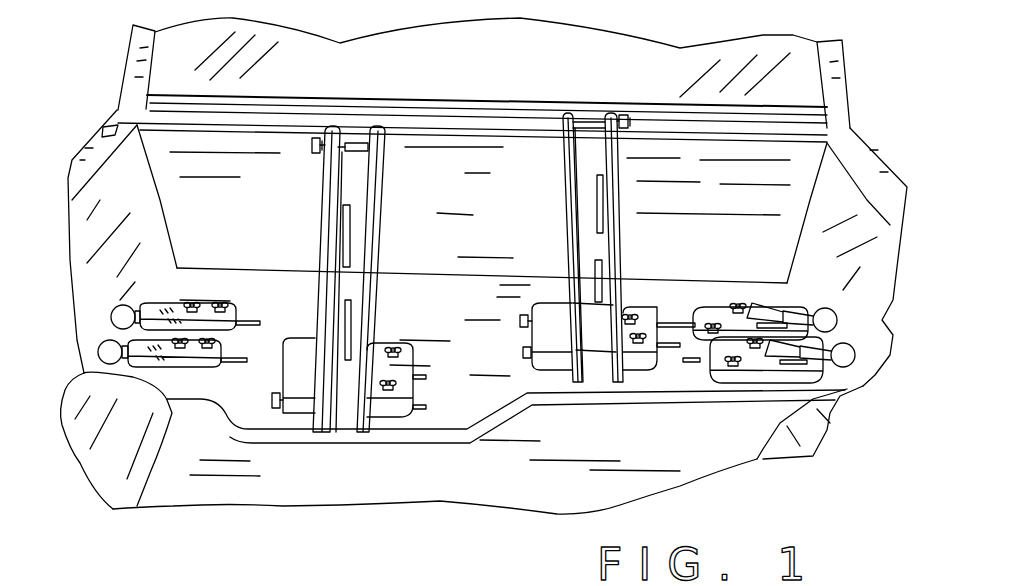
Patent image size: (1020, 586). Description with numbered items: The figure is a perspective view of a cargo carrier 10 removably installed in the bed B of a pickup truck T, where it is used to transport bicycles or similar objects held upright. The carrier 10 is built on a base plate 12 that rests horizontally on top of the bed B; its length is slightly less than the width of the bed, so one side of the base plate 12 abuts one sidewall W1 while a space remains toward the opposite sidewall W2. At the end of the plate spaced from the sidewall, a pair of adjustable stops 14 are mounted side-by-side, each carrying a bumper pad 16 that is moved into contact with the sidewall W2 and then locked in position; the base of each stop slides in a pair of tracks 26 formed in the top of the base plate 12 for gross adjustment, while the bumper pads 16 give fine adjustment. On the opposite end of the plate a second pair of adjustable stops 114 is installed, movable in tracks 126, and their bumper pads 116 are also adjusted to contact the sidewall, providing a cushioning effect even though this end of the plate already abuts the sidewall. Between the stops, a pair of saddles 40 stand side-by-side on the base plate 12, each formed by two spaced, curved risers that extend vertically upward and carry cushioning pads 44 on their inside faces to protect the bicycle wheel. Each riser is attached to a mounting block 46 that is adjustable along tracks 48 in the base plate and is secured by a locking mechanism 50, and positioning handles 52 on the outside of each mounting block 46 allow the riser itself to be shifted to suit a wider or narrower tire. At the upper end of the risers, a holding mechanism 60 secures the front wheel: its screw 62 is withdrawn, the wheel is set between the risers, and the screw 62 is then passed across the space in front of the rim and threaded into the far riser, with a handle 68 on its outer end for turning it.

The cargo carrier 10 is at (496, 456).
The base plate 12 is at (236, 434).
The adjustable stops 14 is at (719, 308).
The bumper pad 16 is at (858, 355).
The tracks 26 is at (683, 322).
The saddles 40 is at (320, 212).
The cushioning pads 44 is at (352, 310).
The mounting block 46 is at (305, 418).
The tracks 48 is at (427, 382).
The locking mechanism 50 is at (403, 335).
The positioning handles 52 is at (407, 347).
The holding mechanism 60 is at (355, 168).
The screw 62 is at (354, 142).
The handle 68 is at (312, 147).
The adjustable stops 114 is at (233, 313).
The bumper pads 116 is at (99, 352).
The tracks 126 is at (240, 357).
The pickup truck T is at (112, 110).
The sidewall W1 is at (108, 241).
The sidewall W2 is at (830, 218).
The bed B is at (480, 326).